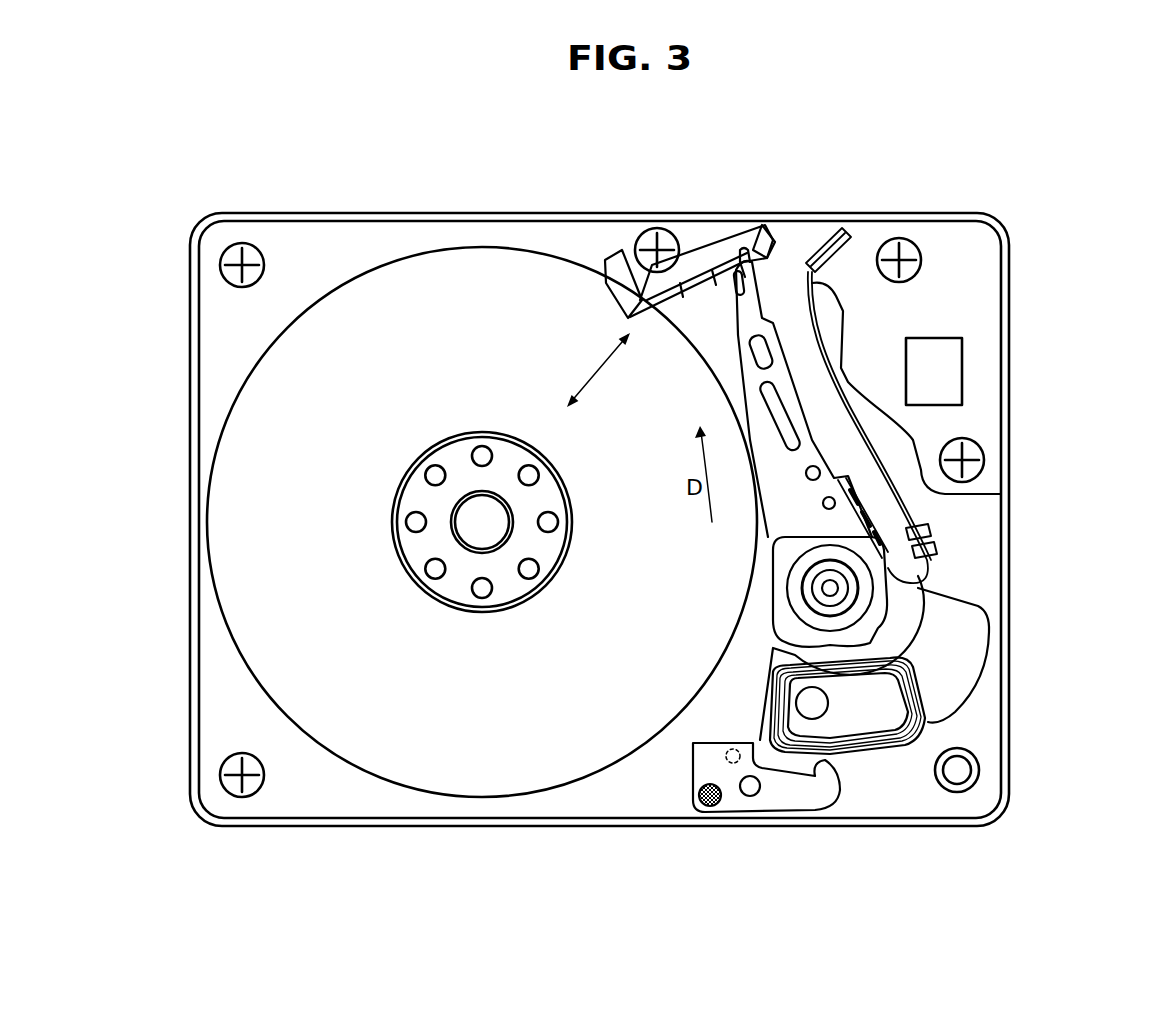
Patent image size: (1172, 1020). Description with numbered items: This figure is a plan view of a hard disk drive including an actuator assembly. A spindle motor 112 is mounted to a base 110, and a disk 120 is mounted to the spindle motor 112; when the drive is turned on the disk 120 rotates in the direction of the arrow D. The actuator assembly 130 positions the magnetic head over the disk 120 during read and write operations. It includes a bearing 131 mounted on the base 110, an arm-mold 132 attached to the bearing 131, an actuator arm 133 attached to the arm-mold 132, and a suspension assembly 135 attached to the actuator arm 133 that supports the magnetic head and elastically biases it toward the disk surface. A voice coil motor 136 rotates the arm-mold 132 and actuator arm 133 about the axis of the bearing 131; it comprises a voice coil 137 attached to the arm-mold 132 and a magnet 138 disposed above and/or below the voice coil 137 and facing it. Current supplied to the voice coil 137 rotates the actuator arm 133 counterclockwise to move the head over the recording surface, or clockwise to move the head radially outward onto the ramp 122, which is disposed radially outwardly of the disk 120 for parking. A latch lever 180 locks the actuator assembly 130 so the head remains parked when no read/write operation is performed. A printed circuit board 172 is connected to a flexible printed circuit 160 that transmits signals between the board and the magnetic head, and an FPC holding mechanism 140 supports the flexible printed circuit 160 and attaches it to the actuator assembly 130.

The base 110 is at (549, 807).
The spindle motor 112 is at (420, 493).
The disk 120 is at (454, 268).
The ramp 122 is at (706, 265).
The actuator assembly 130 is at (912, 468).
The bearing 131 is at (830, 590).
The arm-mold 132 is at (795, 650).
The actuator arm 133 is at (787, 523).
The suspension assembly 135 is at (777, 302).
The voice coil motor 136 is at (965, 671).
The voice coil 137 is at (927, 710).
The magnet 138 is at (968, 653).
The FPC holding mechanism 140 is at (952, 552).
The flexible printed circuit 160 is at (865, 430).
The printed circuit board 172 is at (975, 296).
The latch lever 180 is at (770, 800).